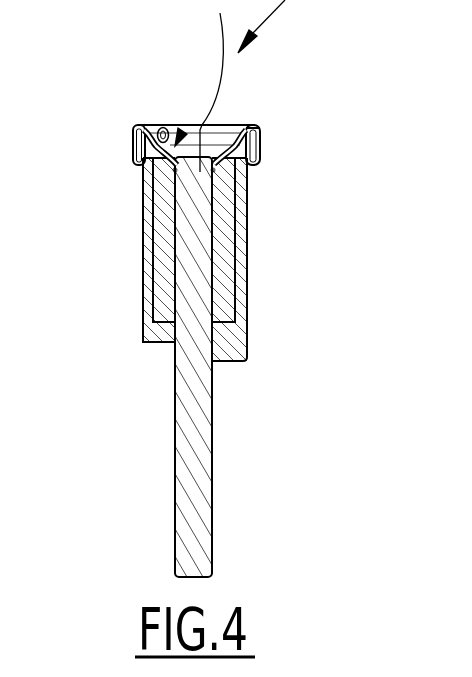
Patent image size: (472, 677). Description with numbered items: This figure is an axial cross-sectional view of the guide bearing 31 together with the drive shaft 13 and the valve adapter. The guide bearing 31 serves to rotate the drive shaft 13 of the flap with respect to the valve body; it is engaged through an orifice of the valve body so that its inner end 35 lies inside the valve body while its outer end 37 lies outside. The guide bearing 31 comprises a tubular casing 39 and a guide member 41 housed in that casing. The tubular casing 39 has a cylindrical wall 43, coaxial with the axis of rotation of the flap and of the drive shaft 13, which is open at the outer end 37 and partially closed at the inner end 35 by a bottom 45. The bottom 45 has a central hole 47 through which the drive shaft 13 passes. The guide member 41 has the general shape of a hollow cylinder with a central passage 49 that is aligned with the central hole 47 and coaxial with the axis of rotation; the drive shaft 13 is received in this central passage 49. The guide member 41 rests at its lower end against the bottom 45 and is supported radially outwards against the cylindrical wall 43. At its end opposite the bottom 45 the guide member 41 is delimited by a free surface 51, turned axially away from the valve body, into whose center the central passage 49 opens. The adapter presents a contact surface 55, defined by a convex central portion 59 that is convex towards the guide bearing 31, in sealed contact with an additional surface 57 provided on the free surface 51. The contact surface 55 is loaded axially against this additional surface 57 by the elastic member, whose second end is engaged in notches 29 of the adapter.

The drive shaft 13 is at (202, 440).
The notches 29 is at (143, 127).
The guide bearing 31 is at (318, 221).
The inner end 35 is at (150, 315).
The outer end 37 is at (140, 173).
The tubular casing 39 is at (273, 283).
The guide member 41 is at (163, 220).
The cylindrical wall 43 is at (148, 265).
The bottom 45 is at (160, 330).
The central hole 47 is at (222, 341).
The central passage 49 is at (225, 218).
The free surface 51 is at (263, 137).
The contact surface 55 is at (157, 131).
The additional surface 57 is at (150, 163).
The convex central portion 59 is at (183, 130).